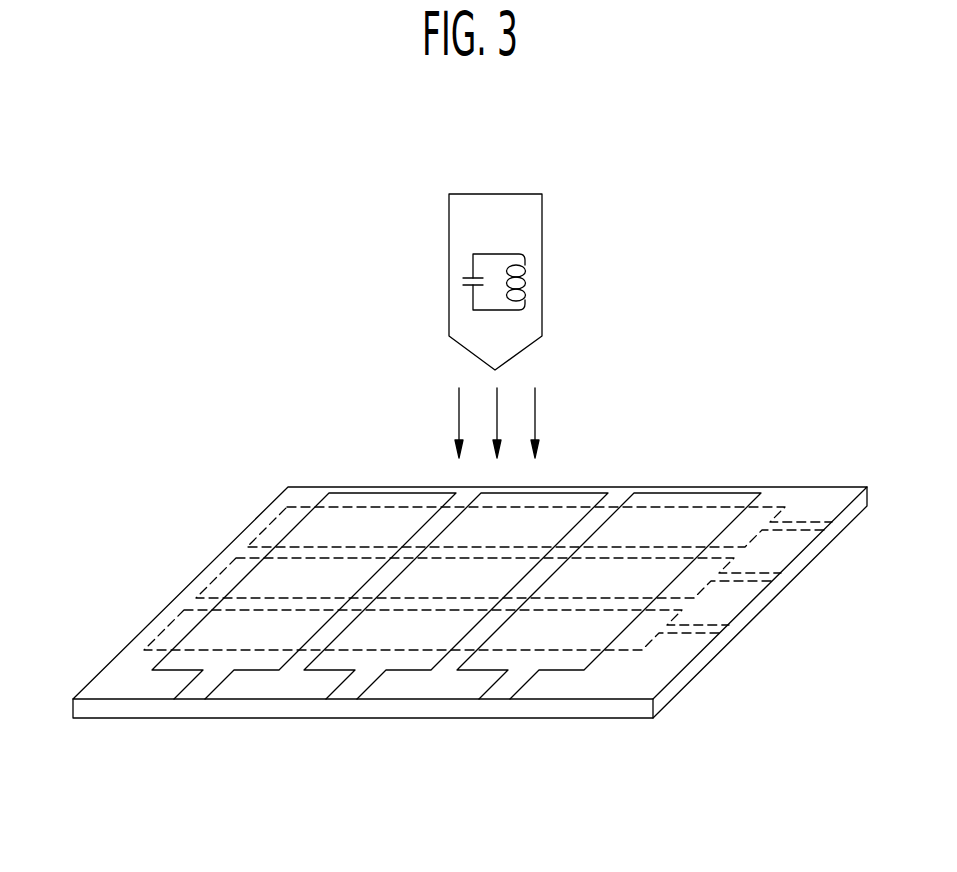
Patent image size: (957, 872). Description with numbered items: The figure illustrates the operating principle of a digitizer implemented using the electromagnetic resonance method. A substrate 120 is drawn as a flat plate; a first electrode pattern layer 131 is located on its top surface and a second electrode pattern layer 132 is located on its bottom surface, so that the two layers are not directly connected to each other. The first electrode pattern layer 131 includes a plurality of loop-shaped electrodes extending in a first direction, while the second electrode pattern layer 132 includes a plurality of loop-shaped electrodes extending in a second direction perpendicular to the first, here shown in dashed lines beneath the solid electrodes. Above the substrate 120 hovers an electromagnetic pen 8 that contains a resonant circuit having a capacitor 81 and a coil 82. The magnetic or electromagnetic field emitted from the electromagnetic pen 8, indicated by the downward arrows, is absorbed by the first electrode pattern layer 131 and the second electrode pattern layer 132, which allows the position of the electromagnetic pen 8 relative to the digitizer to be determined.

The electromagnetic pen 8 is at (506, 233).
The capacitor 81 is at (466, 273).
The coil 82 is at (526, 287).
The substrate 120 is at (411, 708).
The first electrode pattern layer 131 is at (170, 687).
The second electrode pattern layer 132 is at (805, 514).